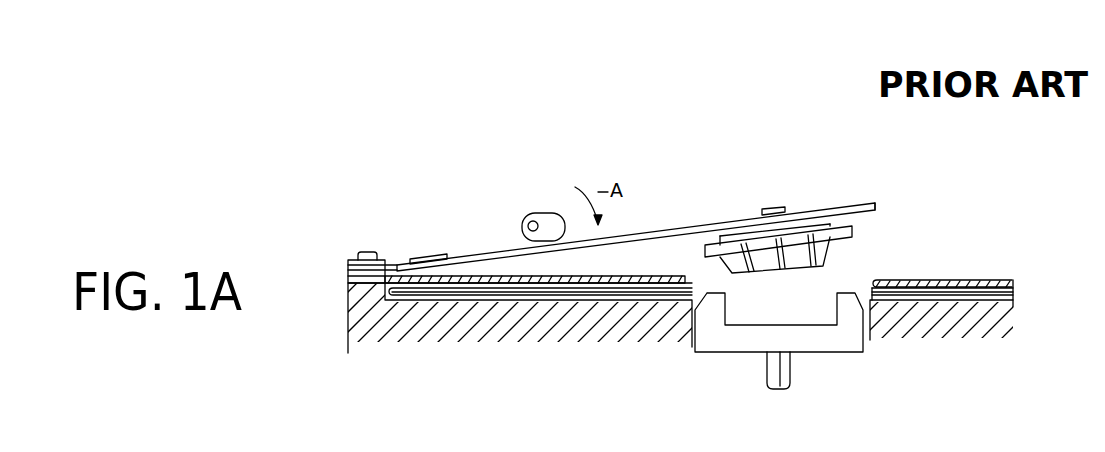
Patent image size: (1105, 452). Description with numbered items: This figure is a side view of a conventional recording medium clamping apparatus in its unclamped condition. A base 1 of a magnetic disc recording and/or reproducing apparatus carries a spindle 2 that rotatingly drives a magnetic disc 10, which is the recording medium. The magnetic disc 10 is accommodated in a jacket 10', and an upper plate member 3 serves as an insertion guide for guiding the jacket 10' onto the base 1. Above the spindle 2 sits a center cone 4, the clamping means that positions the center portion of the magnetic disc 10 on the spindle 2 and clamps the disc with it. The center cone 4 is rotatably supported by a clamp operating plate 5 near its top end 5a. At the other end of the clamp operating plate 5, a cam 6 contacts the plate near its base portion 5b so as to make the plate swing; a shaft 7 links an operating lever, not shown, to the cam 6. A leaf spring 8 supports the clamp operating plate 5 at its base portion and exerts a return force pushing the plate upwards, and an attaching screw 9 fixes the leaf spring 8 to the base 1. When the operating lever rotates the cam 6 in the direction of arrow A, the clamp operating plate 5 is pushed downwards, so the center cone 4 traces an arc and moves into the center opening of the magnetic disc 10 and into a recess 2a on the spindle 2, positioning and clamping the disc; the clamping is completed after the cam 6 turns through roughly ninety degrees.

The base 1 is at (545, 328).
The spindle 2 is at (843, 347).
The recess 2a is at (745, 318).
The upper plate member 3 is at (983, 283).
The center cone 4 is at (828, 257).
The clamp operating plate 5 is at (683, 228).
The top end 5a is at (875, 202).
The base portion 5b is at (434, 258).
The cam 6 is at (557, 213).
The shaft 7 is at (528, 221).
The leaf spring 8 is at (395, 267).
The attaching screw 9 is at (377, 251).
The magnetic disc 10 is at (538, 346).
The jacket 10' is at (939, 261).